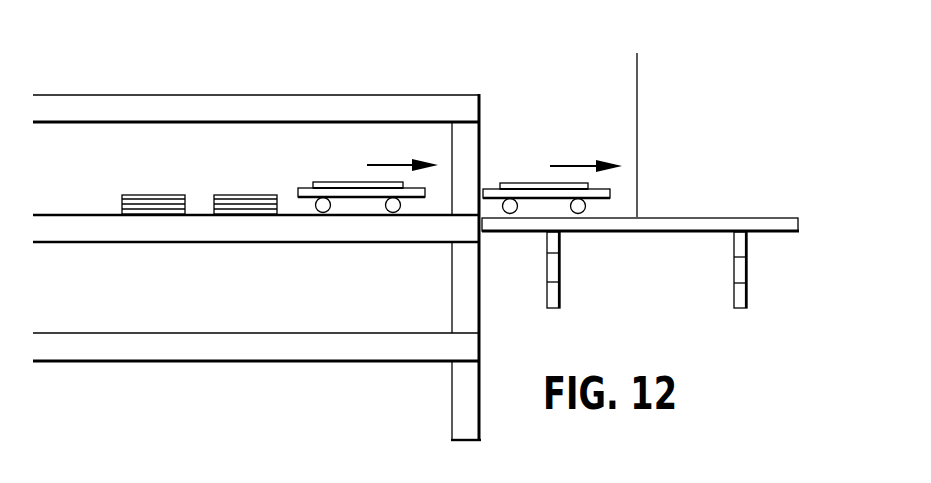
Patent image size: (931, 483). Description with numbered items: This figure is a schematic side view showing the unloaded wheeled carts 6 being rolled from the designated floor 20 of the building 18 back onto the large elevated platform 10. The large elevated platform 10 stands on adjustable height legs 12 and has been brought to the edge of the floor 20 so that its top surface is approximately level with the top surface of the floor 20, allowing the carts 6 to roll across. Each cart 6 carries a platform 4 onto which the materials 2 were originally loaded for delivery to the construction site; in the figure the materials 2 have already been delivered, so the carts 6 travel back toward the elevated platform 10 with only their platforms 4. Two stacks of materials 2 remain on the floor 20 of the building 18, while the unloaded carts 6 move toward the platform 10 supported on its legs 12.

The materials 2 is at (152, 194).
The platform 4 is at (330, 182).
The cart 6 is at (302, 188).
The large elevated platform 10 is at (800, 222).
The adjustable height legs 12 is at (560, 262).
The building 18 is at (481, 108).
The floor 20 is at (374, 228).